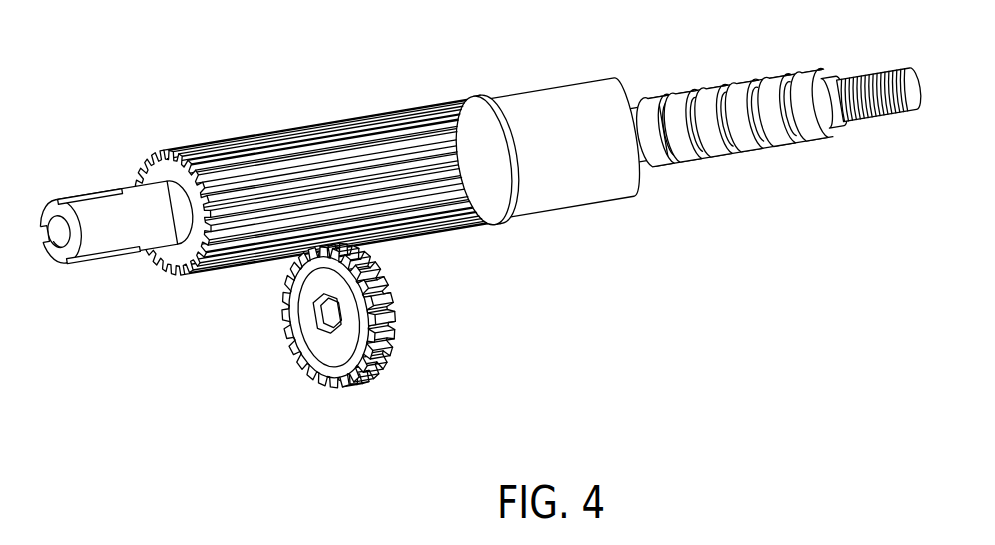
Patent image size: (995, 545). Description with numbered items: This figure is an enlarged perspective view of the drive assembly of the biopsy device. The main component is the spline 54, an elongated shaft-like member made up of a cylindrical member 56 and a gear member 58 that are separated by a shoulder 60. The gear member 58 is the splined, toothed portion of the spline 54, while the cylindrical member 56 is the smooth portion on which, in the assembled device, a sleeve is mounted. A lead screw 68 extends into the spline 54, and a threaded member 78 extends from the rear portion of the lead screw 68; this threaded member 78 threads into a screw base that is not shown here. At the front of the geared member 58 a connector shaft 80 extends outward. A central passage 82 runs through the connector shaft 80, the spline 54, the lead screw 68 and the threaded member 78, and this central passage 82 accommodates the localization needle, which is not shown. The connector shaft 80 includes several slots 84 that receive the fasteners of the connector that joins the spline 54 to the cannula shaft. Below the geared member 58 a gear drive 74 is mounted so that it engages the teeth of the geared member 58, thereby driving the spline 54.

The spline 54 is at (359, 103).
The cylindrical member 56 is at (563, 100).
The gear member 58 is at (149, 170).
The shoulder 60 is at (497, 108).
The lead screw 68 is at (725, 143).
The gear drive 74 is at (312, 368).
The threaded member 78 is at (877, 110).
The connector shaft 80 is at (156, 236).
The central passage 82 is at (52, 263).
The slots 84 is at (40, 231).